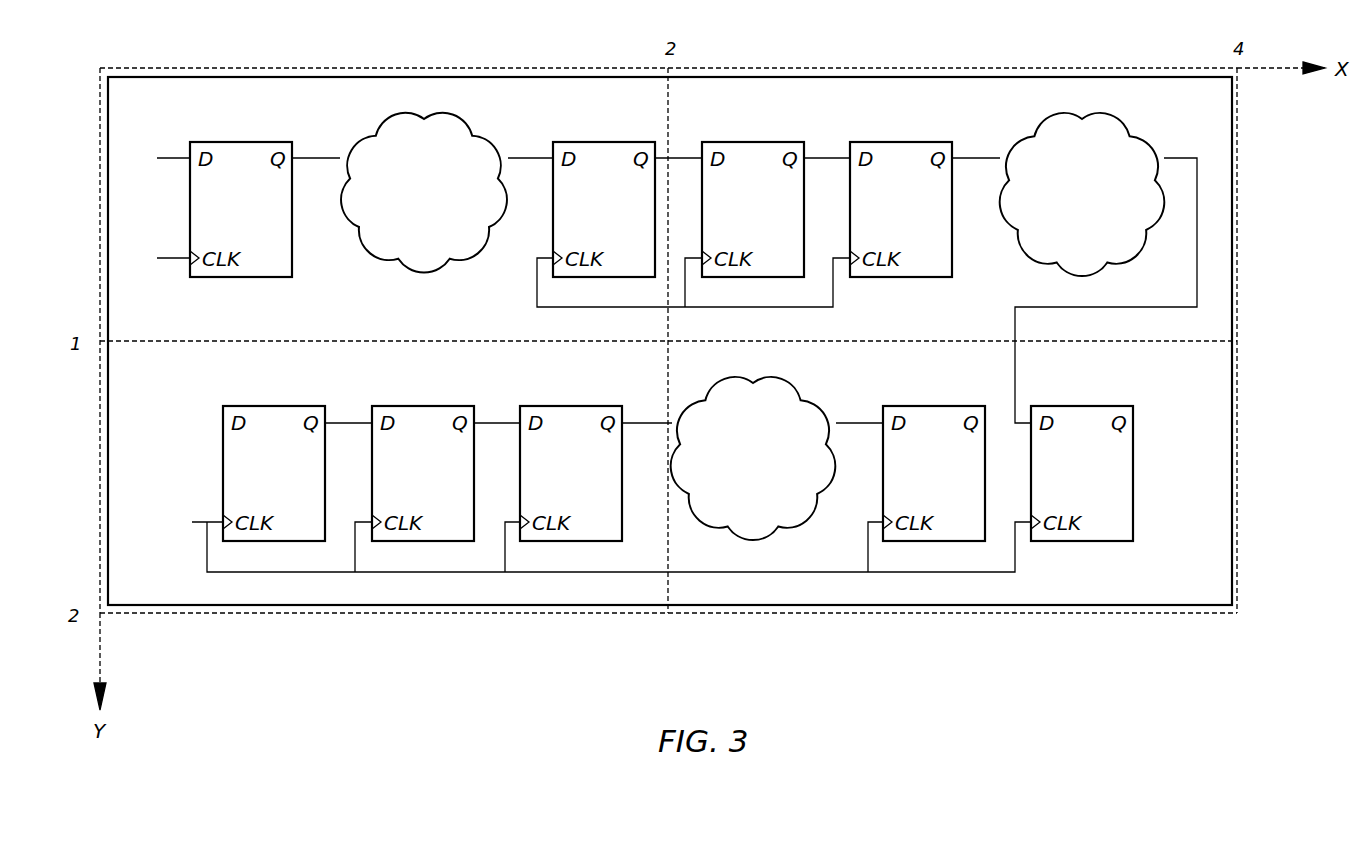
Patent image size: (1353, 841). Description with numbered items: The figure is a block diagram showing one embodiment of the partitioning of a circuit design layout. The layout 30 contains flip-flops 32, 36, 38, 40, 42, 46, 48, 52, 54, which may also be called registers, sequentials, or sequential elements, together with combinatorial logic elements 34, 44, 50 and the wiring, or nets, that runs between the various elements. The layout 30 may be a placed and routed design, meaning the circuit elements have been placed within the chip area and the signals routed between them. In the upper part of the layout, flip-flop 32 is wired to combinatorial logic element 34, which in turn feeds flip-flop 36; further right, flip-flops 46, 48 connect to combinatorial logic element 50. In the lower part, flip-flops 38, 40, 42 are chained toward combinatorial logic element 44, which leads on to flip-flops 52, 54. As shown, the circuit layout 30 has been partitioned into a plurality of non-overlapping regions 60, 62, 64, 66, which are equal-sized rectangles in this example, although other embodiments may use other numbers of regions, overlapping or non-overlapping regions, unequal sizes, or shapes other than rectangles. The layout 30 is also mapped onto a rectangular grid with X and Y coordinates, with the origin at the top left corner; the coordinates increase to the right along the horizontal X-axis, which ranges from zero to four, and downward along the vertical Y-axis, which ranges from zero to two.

The layout 30 is at (668, 340).
The flip-flop 32 is at (242, 142).
The combinatorial logic element 34 is at (424, 193).
The flip-flop 36 is at (604, 142).
The flip-flop 38 is at (274, 406).
The flip-flop 40 is at (423, 406).
The flip-flop 42 is at (571, 406).
The combinatorial logic element 44 is at (753, 458).
The flip-flop 46 is at (753, 142).
The flip-flop 48 is at (901, 142).
The combinatorial logic element 50 is at (1082, 194).
The flip-flop 52 is at (934, 406).
The flip-flop 54 is at (1082, 406).
The region 60 is at (372, 68).
The region 62 is at (934, 68).
The region 64 is at (372, 613).
The region 66 is at (934, 613).